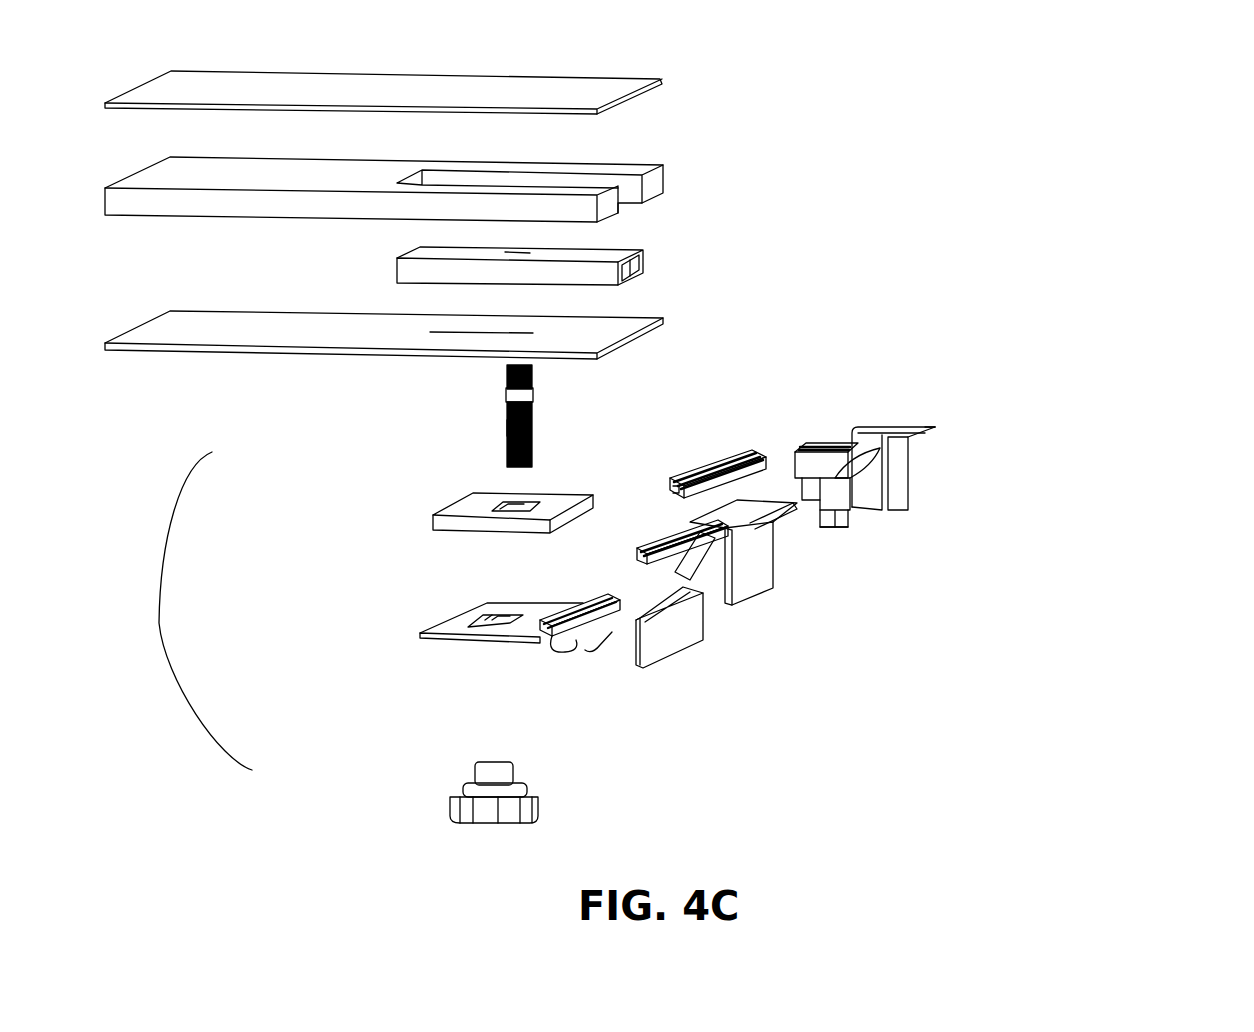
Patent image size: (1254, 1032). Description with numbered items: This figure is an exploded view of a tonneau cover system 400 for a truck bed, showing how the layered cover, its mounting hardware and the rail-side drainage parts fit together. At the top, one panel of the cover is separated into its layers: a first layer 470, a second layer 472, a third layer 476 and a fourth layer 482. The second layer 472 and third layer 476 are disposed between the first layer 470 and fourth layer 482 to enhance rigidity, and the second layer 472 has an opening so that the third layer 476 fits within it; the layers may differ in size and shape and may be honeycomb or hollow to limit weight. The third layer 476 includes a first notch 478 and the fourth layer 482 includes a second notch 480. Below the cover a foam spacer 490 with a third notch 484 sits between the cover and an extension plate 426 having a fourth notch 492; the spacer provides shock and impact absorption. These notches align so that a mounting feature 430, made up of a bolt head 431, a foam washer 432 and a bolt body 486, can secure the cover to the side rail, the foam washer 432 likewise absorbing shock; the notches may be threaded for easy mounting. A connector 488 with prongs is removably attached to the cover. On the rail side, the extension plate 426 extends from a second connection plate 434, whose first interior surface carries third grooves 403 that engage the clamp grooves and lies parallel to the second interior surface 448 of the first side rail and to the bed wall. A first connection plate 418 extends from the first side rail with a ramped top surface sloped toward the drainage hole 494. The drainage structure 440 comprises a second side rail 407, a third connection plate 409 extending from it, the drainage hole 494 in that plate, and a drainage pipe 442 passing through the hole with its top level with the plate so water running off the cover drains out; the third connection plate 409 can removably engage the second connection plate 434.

The tonneau cover system 400 is at (1061, 170).
The third grooves 403 is at (660, 660).
The second side rail 407 is at (940, 428).
The third connection plate 409 is at (885, 488).
The first connection plate 418 is at (760, 600).
The extension plate 426 is at (420, 634).
The mounting feature 430 is at (176, 611).
The bolt head 431 is at (455, 798).
The foam washer 432 is at (533, 395).
The second connection plate 434 is at (490, 604).
The drainage structure 440 is at (885, 425).
The drainage pipe 442 is at (850, 517).
The second interior surface 448 is at (780, 575).
The first layer 470 is at (662, 95).
The second layer 472 is at (663, 178).
The third layer 476 is at (643, 265).
The first notch 478 is at (527, 255).
The second notch 480 is at (430, 332).
The fourth layer 482 is at (663, 330).
The third notch 484 is at (503, 497).
The bolt body 486 is at (507, 428).
The connector 488 is at (745, 455).
The foam spacer 490 is at (433, 522).
The fourth notch 492 is at (548, 598).
The drainage hole 494 is at (825, 445).